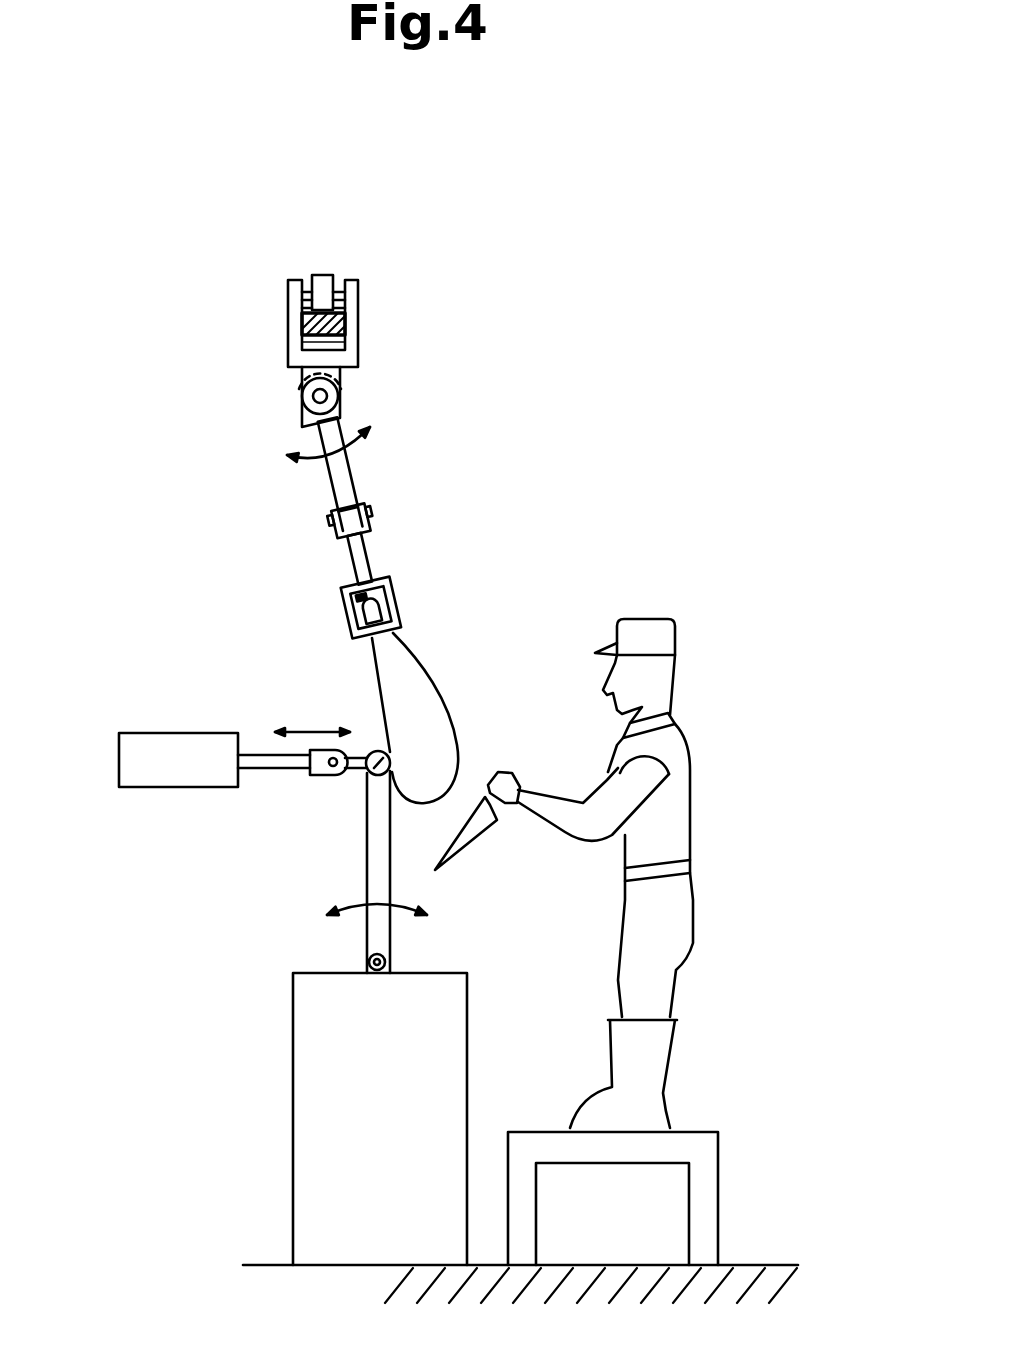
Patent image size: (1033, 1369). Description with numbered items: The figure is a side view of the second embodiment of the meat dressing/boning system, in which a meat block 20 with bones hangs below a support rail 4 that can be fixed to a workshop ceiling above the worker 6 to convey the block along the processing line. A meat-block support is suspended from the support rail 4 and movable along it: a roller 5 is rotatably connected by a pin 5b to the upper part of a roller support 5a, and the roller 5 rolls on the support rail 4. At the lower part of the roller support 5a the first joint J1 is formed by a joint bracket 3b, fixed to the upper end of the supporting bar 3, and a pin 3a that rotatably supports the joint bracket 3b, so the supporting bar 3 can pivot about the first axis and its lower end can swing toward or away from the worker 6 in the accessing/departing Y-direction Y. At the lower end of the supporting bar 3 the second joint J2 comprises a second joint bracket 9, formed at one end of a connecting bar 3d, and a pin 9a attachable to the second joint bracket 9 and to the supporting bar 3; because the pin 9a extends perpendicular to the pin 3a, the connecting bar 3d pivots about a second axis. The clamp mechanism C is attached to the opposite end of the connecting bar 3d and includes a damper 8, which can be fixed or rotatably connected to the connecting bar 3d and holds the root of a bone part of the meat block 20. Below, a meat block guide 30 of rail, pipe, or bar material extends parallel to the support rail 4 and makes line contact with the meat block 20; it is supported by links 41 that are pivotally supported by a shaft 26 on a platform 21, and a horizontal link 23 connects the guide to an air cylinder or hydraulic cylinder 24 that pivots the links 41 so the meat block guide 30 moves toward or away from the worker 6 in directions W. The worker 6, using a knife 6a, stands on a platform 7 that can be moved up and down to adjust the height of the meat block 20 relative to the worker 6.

The supporting bar 3 is at (346, 466).
The pin 3a is at (340, 396).
The joint bracket 3b is at (307, 420).
The connecting bar 3d is at (372, 558).
The support rail 4 is at (302, 326).
The roller 5 is at (368, 267).
The roller support 5a is at (358, 326).
The pin 5b is at (336, 284).
The worker 6 is at (597, 873).
The knife 6a is at (483, 840).
The platform 7 is at (702, 1128).
The damper 8 is at (354, 631).
The second joint bracket 9 is at (338, 537).
The pin 9a is at (328, 522).
The meat block 20 is at (440, 687).
The platform 21 is at (320, 972).
The horizontal link 23 is at (360, 757).
The air cylinder or hydraulic cylinder 24 is at (190, 742).
The shaft 26 is at (388, 957).
The meat block guide 30 is at (365, 780).
The links 41 is at (368, 866).
The first joint J1 is at (345, 407).
The second joint J2 is at (377, 513).
The clamp mechanism C is at (313, 621).
The directions W is at (312, 718).
The Y-direction Y is at (328, 460).